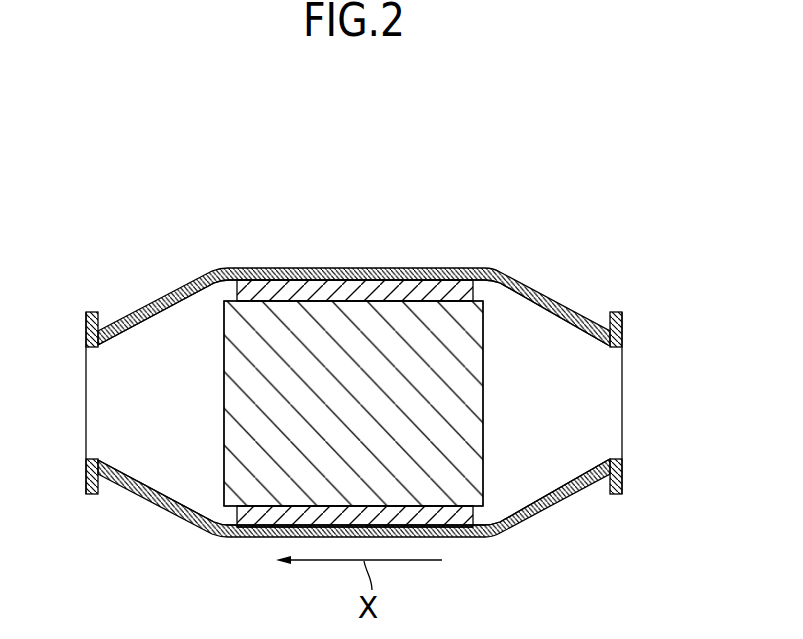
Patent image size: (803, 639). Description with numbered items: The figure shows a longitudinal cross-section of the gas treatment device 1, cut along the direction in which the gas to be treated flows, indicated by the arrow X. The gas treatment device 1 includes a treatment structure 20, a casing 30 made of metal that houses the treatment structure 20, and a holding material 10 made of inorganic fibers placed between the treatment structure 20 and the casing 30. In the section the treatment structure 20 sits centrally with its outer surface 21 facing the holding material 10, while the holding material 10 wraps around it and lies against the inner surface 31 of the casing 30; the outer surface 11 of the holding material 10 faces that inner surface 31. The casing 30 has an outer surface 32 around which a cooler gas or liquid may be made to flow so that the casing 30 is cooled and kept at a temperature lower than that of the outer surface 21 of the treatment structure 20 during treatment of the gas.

The gas treatment device 1 is at (396, 153).
The holding material 10 is at (250, 278).
The outer surface of the holding material 11 is at (303, 282).
The treatment structure 20 is at (233, 327).
The outer surface of the treatment structure 21 is at (450, 297).
The casing 30 is at (452, 281).
The inner surface of the casing 31 is at (365, 288).
The outer surface of the casing 32 is at (404, 276).